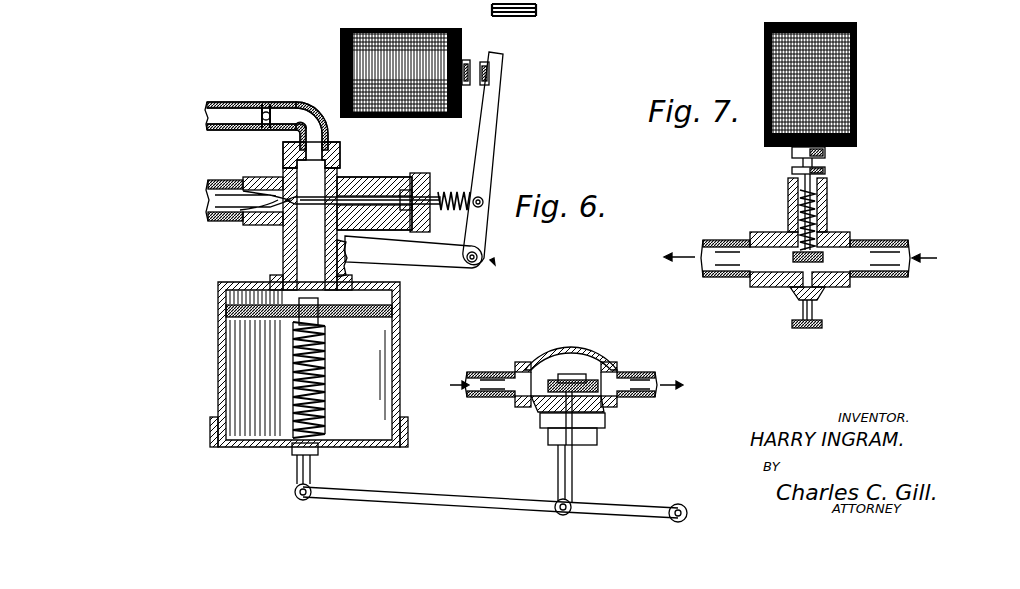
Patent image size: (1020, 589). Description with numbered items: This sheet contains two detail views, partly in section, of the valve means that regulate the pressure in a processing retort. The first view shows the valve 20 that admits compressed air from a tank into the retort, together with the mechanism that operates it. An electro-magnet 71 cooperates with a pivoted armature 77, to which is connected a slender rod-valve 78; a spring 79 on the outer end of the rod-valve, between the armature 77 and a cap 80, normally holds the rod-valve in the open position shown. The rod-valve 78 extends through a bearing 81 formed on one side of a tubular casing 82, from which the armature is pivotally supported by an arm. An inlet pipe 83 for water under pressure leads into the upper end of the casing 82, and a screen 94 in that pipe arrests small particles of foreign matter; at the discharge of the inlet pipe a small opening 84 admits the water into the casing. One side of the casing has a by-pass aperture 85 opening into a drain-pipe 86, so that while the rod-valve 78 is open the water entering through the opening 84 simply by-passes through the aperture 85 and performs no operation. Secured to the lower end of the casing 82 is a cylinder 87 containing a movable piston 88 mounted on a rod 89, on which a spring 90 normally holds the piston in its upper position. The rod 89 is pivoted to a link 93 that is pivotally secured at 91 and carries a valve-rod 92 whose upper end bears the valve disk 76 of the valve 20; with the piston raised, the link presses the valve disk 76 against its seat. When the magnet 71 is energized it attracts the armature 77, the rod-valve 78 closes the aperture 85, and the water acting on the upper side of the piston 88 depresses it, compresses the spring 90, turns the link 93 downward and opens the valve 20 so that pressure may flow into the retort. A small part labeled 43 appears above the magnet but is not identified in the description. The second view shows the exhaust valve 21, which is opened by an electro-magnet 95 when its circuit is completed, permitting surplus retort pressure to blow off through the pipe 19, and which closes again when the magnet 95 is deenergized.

In FIG. 7, the pipe 19 is at (877, 274).
In FIG. 6, the valve 20 is at (594, 355).
In FIG. 7, the valve 21 is at (828, 214).
In FIG. 6, the coil connector 43 is at (528, 14).
In FIG. 6, the electro-magnet 71 is at (396, 26).
In FIG. 6, the valve disk 76 is at (566, 383).
In FIG. 6, the pivoted armature 77 is at (490, 138).
In FIG. 6, the rod-valve 78 is at (380, 198).
In FIG. 6, the spring 79 is at (454, 188).
In FIG. 6, the cap 80 is at (428, 176).
In FIG. 6, the bearing 81 is at (360, 172).
In FIG. 6, the tubular casing 82 is at (282, 252).
In FIG. 6, the inlet pipe 83 is at (235, 103).
In FIG. 6, the small opening 84 is at (290, 175).
In FIG. 6, the by-pass aperture 85 is at (262, 204).
In FIG. 6, the drain-pipe 86 is at (218, 180).
In FIG. 6, the cylinder 87 is at (398, 376).
In FIG. 6, the piston 88 is at (355, 318).
In FIG. 6, the rod 89 is at (312, 470).
In FIG. 6, the spring 90 is at (322, 375).
In FIG. 6, the pivot 91 is at (677, 504).
In FIG. 6, the valve-rod 92 is at (574, 456).
In FIG. 6, the link 93 is at (489, 493).
In FIG. 6, the screen 94 is at (270, 108).
In FIG. 7, the electro-magnet 95 is at (827, 98).